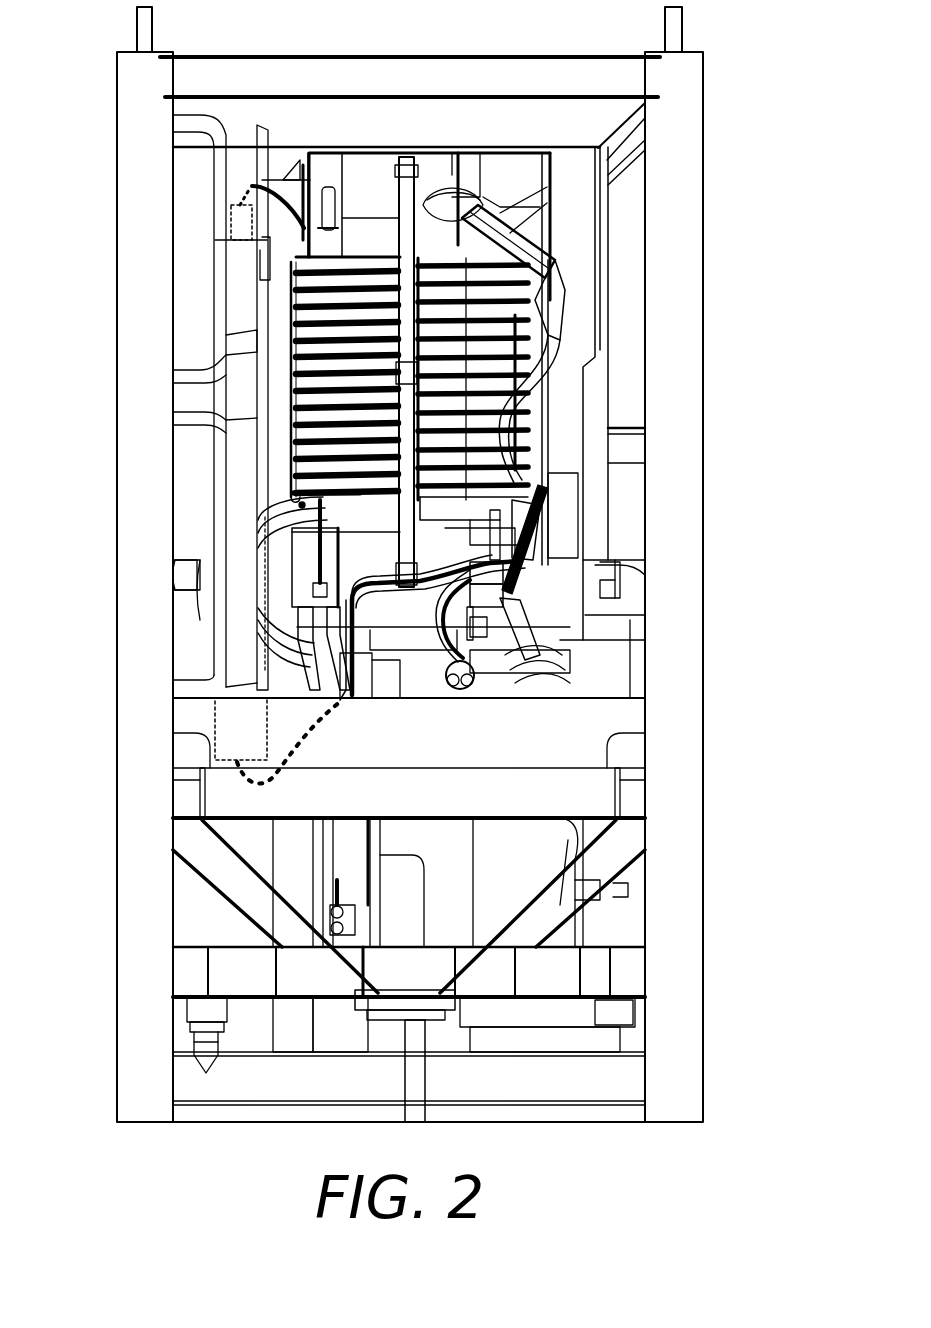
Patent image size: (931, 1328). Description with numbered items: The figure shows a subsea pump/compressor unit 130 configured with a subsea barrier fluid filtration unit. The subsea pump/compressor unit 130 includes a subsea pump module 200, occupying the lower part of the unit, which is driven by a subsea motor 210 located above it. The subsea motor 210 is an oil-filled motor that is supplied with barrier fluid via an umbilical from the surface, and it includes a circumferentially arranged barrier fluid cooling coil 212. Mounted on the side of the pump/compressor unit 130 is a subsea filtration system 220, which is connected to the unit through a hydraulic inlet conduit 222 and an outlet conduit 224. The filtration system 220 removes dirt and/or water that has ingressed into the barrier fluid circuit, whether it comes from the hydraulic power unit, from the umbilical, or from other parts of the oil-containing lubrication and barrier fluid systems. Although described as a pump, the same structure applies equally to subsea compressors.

The subsea pump/compressor unit 130 is at (200, 1184).
The subsea pump module 200 is at (745, 635).
The subsea motor 210 is at (436, 407).
The barrier fluid cooling coil 212 is at (577, 336).
The subsea filtration system 220 is at (225, 280).
The hydraulic inlet conduit 222 is at (320, 716).
The outlet conduit 224 is at (268, 187).